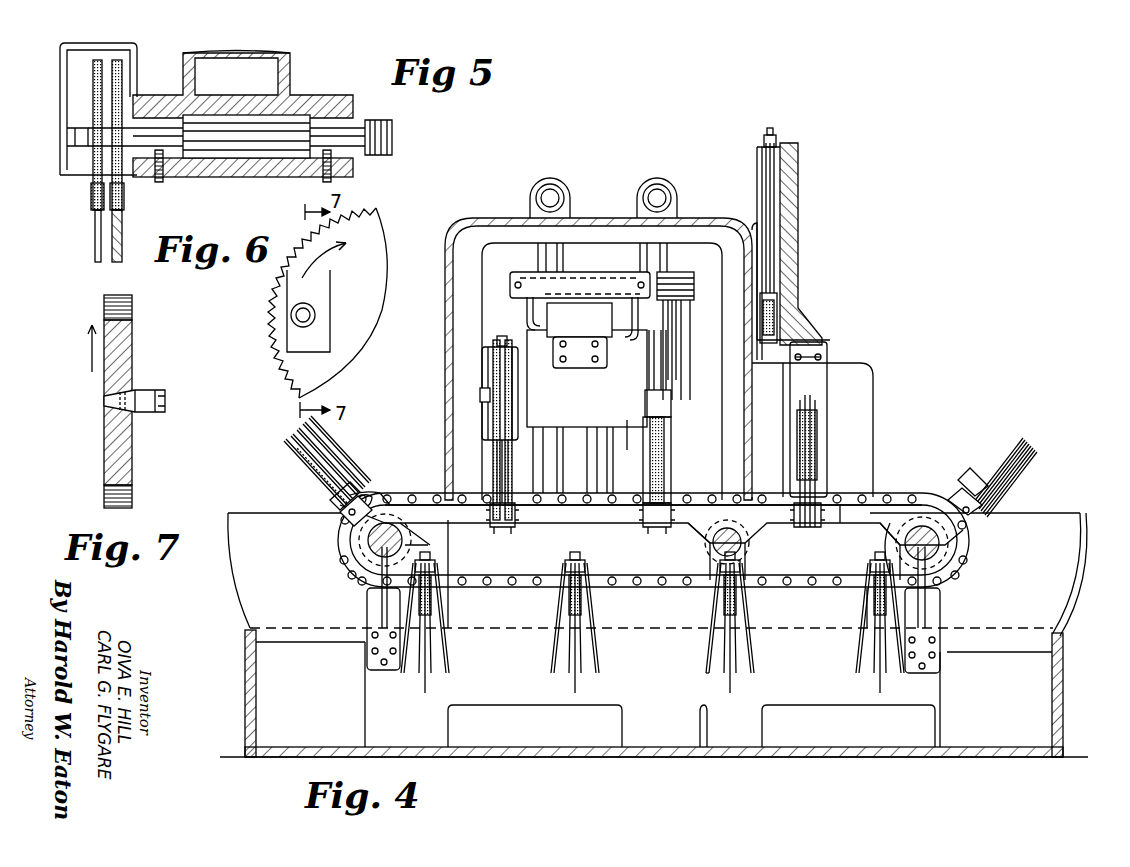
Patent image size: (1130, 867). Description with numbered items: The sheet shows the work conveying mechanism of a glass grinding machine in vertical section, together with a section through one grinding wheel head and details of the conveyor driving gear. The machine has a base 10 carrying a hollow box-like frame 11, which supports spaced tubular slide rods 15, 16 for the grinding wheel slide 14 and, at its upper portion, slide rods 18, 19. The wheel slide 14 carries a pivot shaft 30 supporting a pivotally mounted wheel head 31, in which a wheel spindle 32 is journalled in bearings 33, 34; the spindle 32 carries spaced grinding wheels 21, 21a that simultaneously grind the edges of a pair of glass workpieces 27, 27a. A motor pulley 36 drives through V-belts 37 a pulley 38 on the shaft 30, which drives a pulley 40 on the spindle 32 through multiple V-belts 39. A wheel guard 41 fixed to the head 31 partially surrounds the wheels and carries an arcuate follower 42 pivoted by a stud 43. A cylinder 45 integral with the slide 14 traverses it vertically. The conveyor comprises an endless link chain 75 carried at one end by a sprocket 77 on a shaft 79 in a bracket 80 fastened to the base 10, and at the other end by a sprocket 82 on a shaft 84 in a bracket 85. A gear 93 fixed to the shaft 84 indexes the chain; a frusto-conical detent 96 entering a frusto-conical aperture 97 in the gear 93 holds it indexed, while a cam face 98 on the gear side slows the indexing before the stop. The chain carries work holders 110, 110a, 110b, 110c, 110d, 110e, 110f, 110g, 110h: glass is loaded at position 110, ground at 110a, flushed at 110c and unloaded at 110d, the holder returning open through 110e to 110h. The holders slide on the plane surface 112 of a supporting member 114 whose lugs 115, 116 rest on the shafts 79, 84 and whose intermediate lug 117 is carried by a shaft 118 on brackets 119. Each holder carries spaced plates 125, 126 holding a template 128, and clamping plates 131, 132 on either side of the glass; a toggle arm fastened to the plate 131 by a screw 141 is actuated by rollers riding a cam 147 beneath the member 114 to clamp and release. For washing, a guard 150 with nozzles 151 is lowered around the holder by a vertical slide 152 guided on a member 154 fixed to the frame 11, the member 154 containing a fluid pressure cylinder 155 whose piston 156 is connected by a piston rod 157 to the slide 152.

In FIG. 4, the base 10 is at (246, 690).
In FIG. 4, the box-like frame 11 is at (446, 394).
In FIG. 4, the grinding wheel slide 14 is at (637, 274).
In FIG. 4, the tubular slide rod 15 is at (540, 257).
In FIG. 4, the tubular slide rod 16 is at (668, 258).
In FIG. 4, the tubular slide rod 18 is at (551, 190).
In FIG. 4, the tubular slide rod 19 is at (660, 190).
In FIG. 5, the grinding wheel 21 is at (95, 70).
In FIG. 4, the grinding wheel 21 is at (494, 358).
In FIG. 5, the grinding wheel 21a is at (118, 72).
In FIG. 4, the grinding wheel 21a is at (512, 370).
In FIG. 5, the workpiece 27 is at (94, 232).
In FIG. 5, the workpiece 27a is at (120, 232).
In FIG. 4, the pivot shaft 30 is at (508, 285).
In FIG. 5, the wheel head 31 is at (290, 74).
In FIG. 4, the wheel head 31 is at (627, 442).
In FIG. 5, the wheel spindle 32 is at (228, 130).
In FIG. 4, the wheel spindle 32 is at (483, 396).
In FIG. 5, the bearing 33 is at (162, 172).
In FIG. 5, the bearing 34 is at (333, 170).
In FIG. 4, the pulley 36 is at (692, 344).
In FIG. 4, the V-belts 37 is at (687, 311).
In FIG. 4, the pulley 38 is at (695, 285).
In FIG. 4, the V-belts 39 is at (678, 378).
In FIG. 5, the pulley 40 is at (385, 120).
In FIG. 4, the pulley 40 is at (672, 404).
In FIG. 5, the wheel guard 41 is at (62, 103).
In FIG. 4, the wheel guard 41 is at (514, 440).
In FIG. 5, the follower 42 is at (91, 192).
In FIG. 4, the stud 43 is at (489, 347).
In FIG. 4, the cylinder 45 is at (595, 468).
In FIG. 4, the link chain 75 is at (388, 490).
In FIG. 4, the sprocket 77 is at (432, 505).
In FIG. 4, the shaft 79 is at (403, 540).
In FIG. 4, the bracket 80 is at (366, 600).
In FIG. 4, the sprocket 82 is at (890, 523).
In FIG. 4, the shaft 84 is at (938, 548).
In FIG. 4, the bracket 85 is at (941, 603).
In FIG. 6, the gear 93 is at (272, 311).
In FIG. 7, the gear 93 is at (128, 320).
In FIG. 7, the detent 96 is at (104, 402).
In FIG. 6, the aperture 97 is at (295, 325).
In FIG. 7, the aperture 97 is at (104, 392).
In FIG. 6, the cam face 98 is at (312, 305).
In FIG. 7, the cam face 98 is at (130, 392).
In FIG. 4, the work holder 110 is at (330, 516).
In FIG. 4, the work holder position 110a is at (490, 490).
In FIG. 4, the work holder position 110b is at (677, 495).
In FIG. 4, the work holder position 110c is at (827, 490).
In FIG. 4, the work holder position 110d is at (953, 490).
In FIG. 4, the work holder position 110e is at (864, 596).
In FIG. 4, the work holder position 110f is at (754, 603).
In FIG. 4, the work holder position 110g is at (598, 601).
In FIG. 4, the work holder position 110h is at (444, 601).
In FIG. 4, the plane surface 112 is at (552, 514).
In FIG. 4, the supporting member 114 is at (612, 515).
In FIG. 4, the lug 115 is at (428, 555).
In FIG. 4, the lug 116 is at (905, 543).
In FIG. 4, the intermediate lug 117 is at (705, 535).
In FIG. 4, the shaft 118 is at (742, 542).
In FIG. 4, the bracket 119 is at (712, 643).
In FIG. 4, the plate 125 is at (292, 445).
In FIG. 4, the plate 126 is at (1030, 455).
In FIG. 4, the template 128 is at (298, 437).
In FIG. 4, the work clamping plate 131 is at (1000, 450).
In FIG. 4, the work clamping plate 132 is at (1020, 470).
In FIG. 4, the screw 141 is at (372, 498).
In FIG. 4, the cam 147 is at (840, 525).
In FIG. 4, the guard 150 is at (828, 352).
In FIG. 4, the nozzle 151 is at (800, 362).
In FIG. 4, the slide 152 is at (800, 258).
In FIG. 4, the vertically arranged member 154 is at (775, 212).
In FIG. 4, the fluid pressure cylinder 155 is at (770, 176).
In FIG. 4, the piston 156 is at (778, 305).
In FIG. 4, the piston rod 157 is at (772, 205).